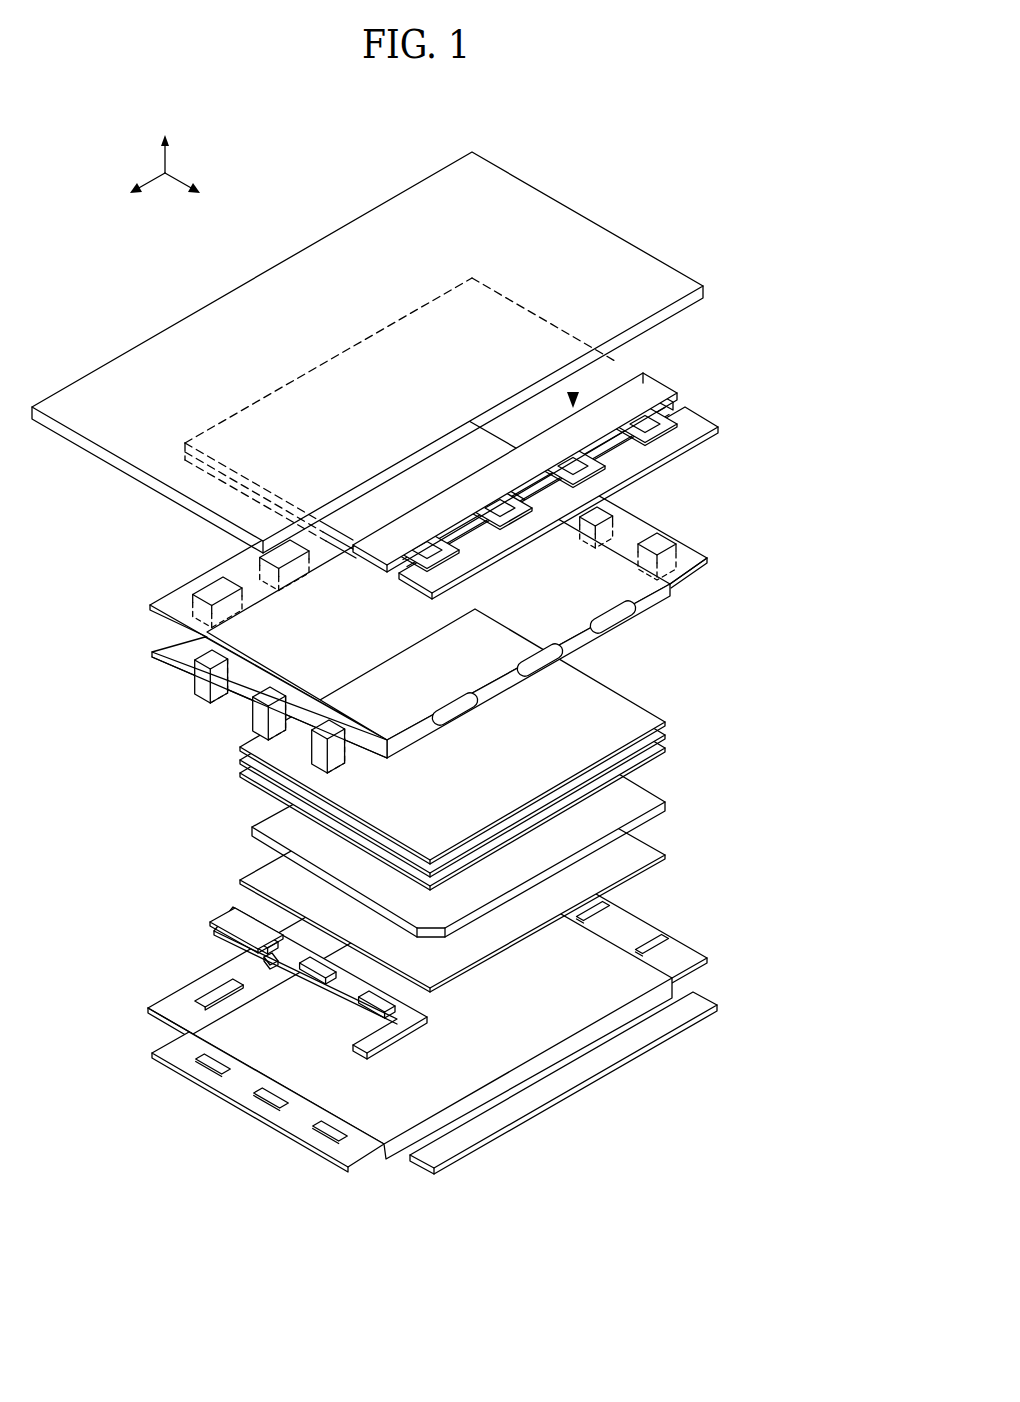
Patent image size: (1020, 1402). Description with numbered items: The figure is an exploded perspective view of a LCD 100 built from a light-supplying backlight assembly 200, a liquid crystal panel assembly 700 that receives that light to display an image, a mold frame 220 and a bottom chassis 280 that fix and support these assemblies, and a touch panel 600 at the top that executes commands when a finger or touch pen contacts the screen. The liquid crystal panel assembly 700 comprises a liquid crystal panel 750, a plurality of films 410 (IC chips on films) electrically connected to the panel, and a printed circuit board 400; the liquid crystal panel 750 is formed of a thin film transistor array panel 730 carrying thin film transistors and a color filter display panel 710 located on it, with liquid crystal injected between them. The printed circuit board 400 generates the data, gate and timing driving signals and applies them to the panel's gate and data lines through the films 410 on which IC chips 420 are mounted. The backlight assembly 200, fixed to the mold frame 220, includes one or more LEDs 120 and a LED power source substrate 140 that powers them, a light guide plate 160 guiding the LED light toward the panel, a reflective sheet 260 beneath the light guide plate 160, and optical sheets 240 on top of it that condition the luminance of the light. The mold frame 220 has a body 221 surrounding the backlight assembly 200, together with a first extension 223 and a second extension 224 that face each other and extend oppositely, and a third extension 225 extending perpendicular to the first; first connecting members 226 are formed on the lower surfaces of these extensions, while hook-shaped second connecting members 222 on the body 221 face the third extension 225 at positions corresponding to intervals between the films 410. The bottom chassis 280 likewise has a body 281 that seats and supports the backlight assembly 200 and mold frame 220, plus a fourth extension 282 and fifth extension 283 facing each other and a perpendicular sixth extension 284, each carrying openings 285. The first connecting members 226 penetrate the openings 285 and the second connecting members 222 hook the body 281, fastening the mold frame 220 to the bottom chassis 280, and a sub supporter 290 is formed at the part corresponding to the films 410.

The LCD 100 is at (420, 637).
The LEDs 120 is at (245, 937).
The LED power source substrate 140 is at (227, 917).
The light guide plate 160 is at (267, 821).
The backlight assembly 200 is at (391, 834).
The mold frame 220 is at (440, 597).
The body 221 is at (655, 600).
The second connecting members 222 is at (620, 617).
The first extension 223 is at (686, 556).
The second extension 224 is at (231, 695).
The third extension 225 is at (190, 578).
The first connecting members 226 is at (205, 663).
The optical sheets 240 is at (426, 749).
The reflective sheet 260 is at (263, 871).
The bottom chassis 280 is at (430, 997).
The body 281 is at (510, 1080).
The fourth extension 282 is at (675, 915).
The fifth extension 283 is at (238, 1088).
The sixth extension 284 is at (172, 1003).
The openings 285 is at (644, 945).
The sub supporter 290 is at (593, 1060).
The printed circuit board 400 is at (596, 501).
The films 410 is at (580, 466).
The IC chips 420 is at (606, 467).
The touch panel 600 is at (514, 195).
The liquid crystal panel assembly 700 is at (564, 360).
The color filter display panel 710 is at (615, 373).
The thin film transistor array panel 730 is at (673, 402).
The liquid crystal panel 750 is at (574, 396).